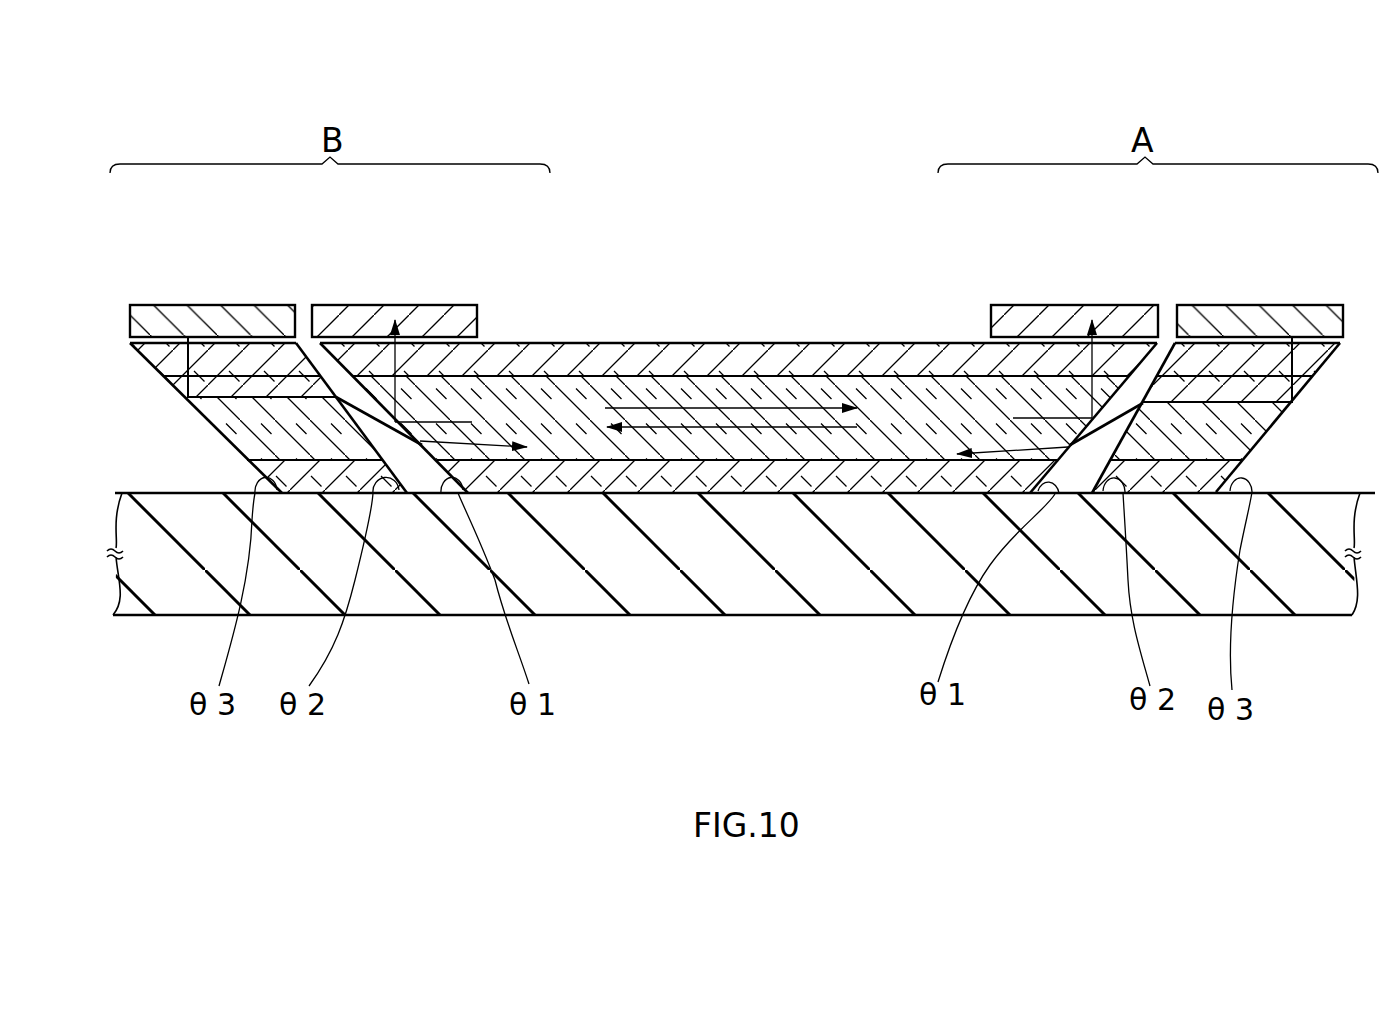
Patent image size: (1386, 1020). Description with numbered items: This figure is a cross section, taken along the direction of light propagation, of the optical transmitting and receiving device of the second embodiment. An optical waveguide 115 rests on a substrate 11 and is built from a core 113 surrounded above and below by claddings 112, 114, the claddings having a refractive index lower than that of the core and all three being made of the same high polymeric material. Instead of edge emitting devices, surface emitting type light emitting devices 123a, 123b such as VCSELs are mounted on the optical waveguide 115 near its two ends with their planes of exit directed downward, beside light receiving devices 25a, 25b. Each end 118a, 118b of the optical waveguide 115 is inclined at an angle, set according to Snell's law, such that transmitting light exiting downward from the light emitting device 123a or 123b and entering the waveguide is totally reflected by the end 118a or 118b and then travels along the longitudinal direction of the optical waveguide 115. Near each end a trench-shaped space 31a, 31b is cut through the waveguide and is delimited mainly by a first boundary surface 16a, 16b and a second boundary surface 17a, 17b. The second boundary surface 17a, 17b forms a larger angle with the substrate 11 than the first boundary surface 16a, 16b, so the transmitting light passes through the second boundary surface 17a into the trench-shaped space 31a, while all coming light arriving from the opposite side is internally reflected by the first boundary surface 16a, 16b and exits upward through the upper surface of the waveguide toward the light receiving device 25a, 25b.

The substrate 11 is at (742, 597).
The optical waveguide 115 is at (735, 341).
The cladding 112 is at (907, 457).
The core 113 is at (907, 390).
The cladding 114 is at (921, 348).
The light receiving device 25a is at (1003, 312).
The light receiving device 25b is at (455, 306).
The surface emitting type light emitting device 123a is at (1310, 306).
The surface emitting type light emitting device 123b is at (172, 306).
The trench-shaped space 31a is at (1159, 358).
The trench-shaped space 31b is at (316, 358).
The first boundary surface 16a is at (1073, 452).
The first boundary surface 16b is at (423, 455).
The second boundary surface 17a is at (1122, 428).
The second boundary surface 17b is at (370, 430).
The end of the optical waveguide 118a is at (1266, 437).
The end of the optical waveguide 118b is at (214, 429).